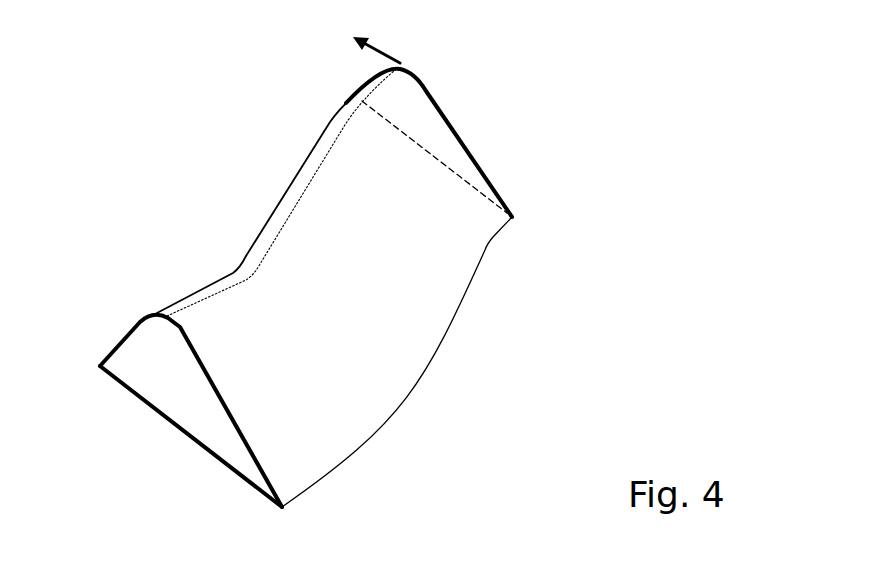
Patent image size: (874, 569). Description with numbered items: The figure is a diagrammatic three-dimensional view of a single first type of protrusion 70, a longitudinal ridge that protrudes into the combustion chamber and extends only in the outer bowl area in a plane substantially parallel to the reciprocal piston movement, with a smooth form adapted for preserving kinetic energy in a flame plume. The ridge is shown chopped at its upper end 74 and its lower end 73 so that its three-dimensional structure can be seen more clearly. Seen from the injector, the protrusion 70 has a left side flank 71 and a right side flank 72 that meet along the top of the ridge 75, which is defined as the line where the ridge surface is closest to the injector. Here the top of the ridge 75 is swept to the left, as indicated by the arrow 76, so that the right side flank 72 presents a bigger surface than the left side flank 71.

The first type of protrusion 70 is at (166, 169).
The left side flank 71 is at (135, 322).
The right side flank 72 is at (382, 317).
The lower end 73 is at (167, 397).
The upper end 74 is at (427, 117).
The top of the ridge 75 is at (325, 150).
The arrow 76 is at (376, 43).